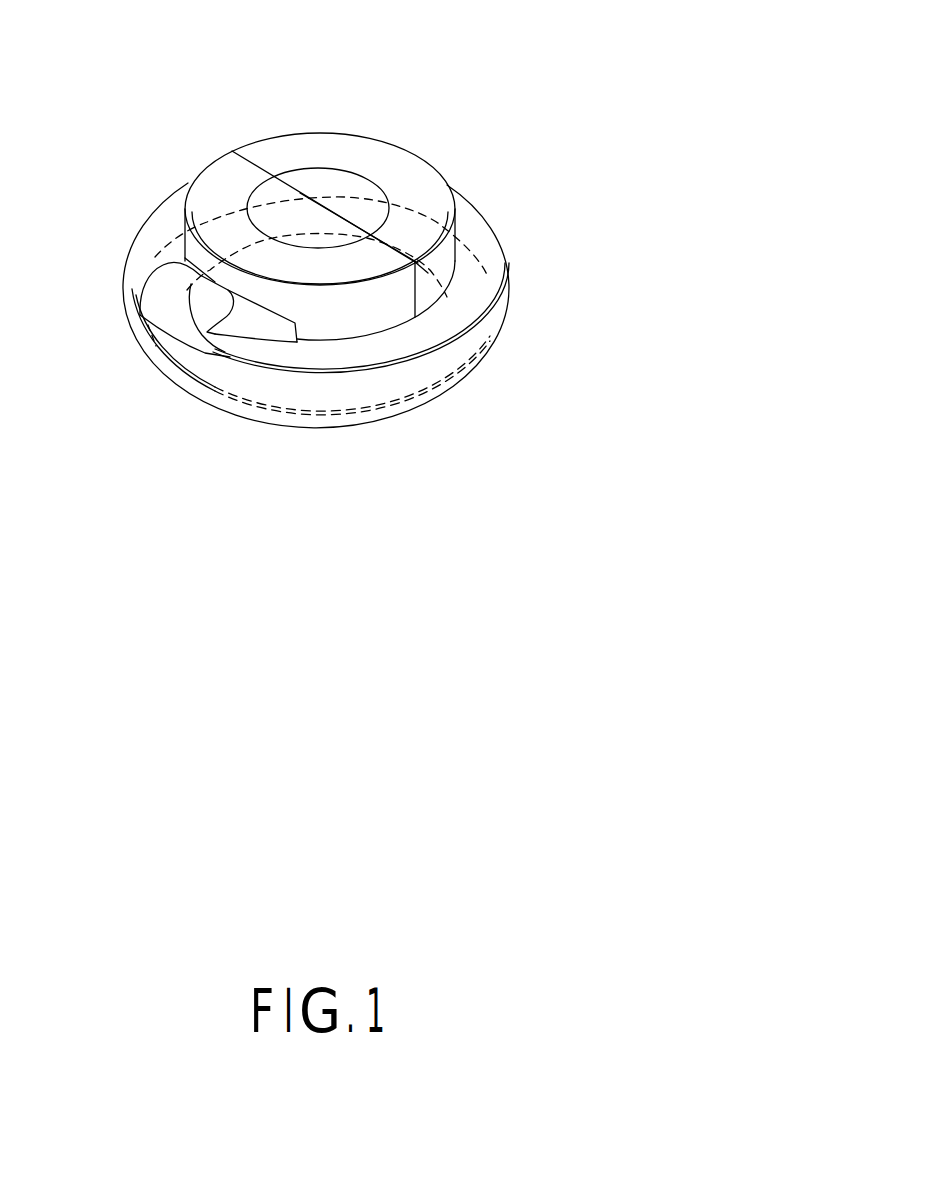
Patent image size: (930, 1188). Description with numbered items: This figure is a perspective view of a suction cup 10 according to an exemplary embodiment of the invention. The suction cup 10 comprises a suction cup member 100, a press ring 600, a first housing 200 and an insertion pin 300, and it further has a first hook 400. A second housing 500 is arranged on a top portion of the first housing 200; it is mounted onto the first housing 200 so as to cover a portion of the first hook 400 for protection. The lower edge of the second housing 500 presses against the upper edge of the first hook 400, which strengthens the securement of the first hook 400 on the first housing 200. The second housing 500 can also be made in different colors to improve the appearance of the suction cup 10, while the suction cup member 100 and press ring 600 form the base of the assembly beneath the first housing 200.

The suction cup 10 is at (610, 41).
The suction cup member 100 is at (427, 403).
The first housing 200 is at (497, 303).
The insertion pin 300 is at (362, 148).
The first hook 400 is at (157, 296).
The second housing 500 is at (217, 167).
The press ring 600 is at (177, 373).